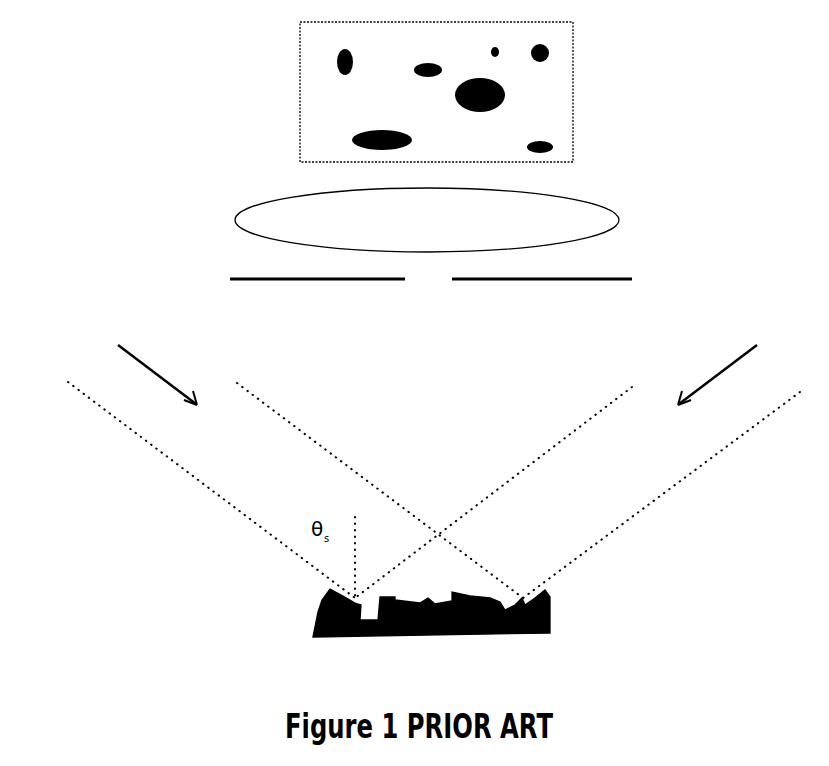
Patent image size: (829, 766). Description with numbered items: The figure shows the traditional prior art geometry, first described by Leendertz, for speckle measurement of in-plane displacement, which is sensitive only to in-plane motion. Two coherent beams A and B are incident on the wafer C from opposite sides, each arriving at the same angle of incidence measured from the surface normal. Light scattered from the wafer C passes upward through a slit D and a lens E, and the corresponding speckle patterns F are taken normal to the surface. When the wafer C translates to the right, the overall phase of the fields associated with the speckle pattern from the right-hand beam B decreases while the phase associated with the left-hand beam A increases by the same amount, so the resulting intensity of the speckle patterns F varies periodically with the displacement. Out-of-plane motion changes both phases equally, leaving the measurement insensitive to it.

The coherent beam A is at (144, 366).
The coherent beam B is at (742, 358).
The wafer C is at (447, 613).
The slit aperture D is at (615, 281).
The lens E is at (612, 228).
The speckle patterns F is at (573, 83).